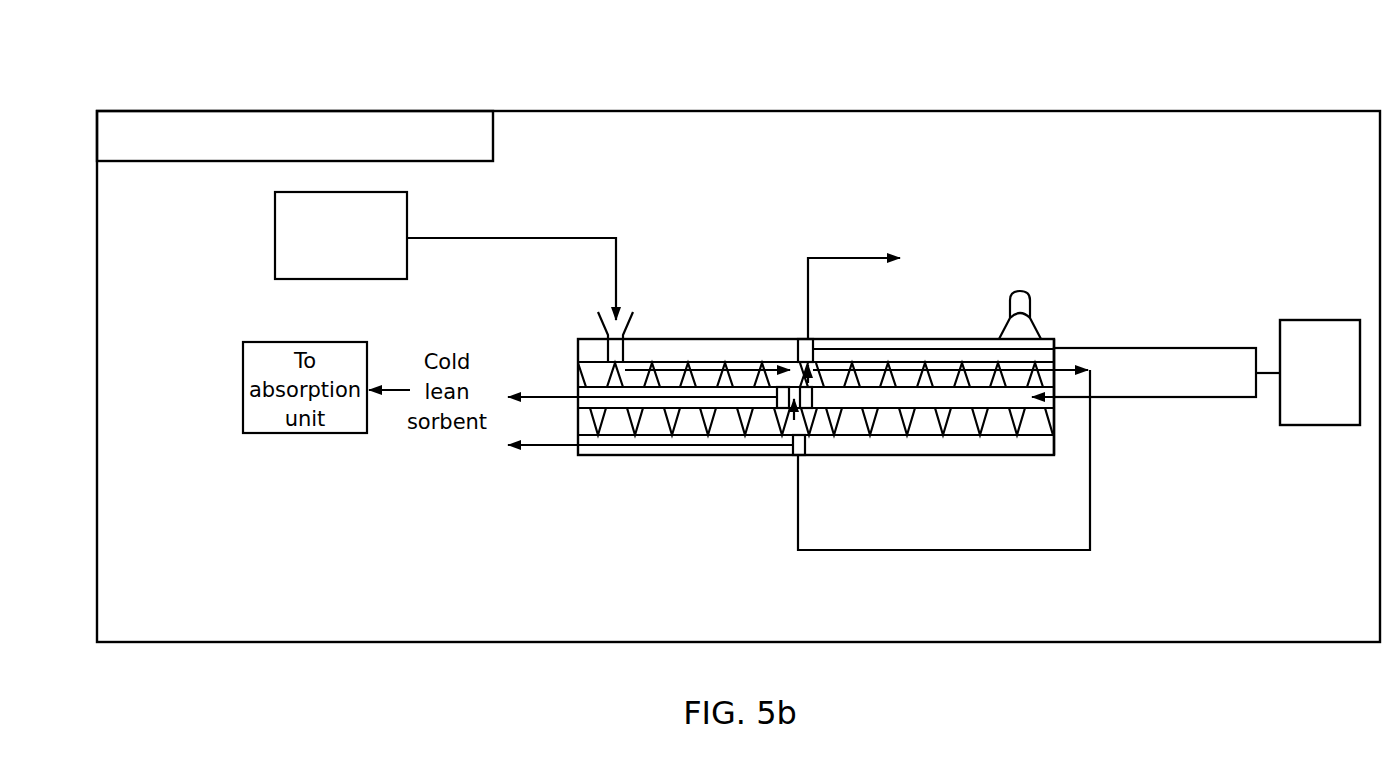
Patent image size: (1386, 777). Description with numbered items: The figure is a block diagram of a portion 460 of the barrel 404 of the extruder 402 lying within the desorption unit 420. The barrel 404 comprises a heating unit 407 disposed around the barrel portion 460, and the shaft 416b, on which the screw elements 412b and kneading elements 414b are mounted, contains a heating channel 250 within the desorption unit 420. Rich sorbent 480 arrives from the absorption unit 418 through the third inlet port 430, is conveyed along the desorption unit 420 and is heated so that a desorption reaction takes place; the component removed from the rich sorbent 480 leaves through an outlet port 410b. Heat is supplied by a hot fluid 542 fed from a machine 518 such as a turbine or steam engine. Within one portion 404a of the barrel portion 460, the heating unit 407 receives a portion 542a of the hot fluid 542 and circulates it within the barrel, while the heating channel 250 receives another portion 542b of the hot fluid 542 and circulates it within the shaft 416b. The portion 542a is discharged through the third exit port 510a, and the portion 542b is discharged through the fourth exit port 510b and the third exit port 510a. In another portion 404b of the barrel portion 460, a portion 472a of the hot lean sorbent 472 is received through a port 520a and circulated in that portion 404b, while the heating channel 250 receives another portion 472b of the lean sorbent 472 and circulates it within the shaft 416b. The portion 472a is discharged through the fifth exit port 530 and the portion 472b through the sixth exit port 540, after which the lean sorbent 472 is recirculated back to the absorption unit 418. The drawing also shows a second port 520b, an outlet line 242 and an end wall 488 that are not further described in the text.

The portion of the barrel 460 is at (212, 72).
The desorption unit 420 is at (662, 102).
The absorption unit 418 is at (340, 281).
The rich sorbent 480 is at (510, 237).
The extruder 402 is at (575, 326).
The third inlet port 430 is at (628, 333).
The barrel 404 is at (612, 438).
The heating channel 250 is at (660, 410).
The portion of the lean sorbent 472b is at (668, 398).
The heating unit 407 is at (690, 456).
The portion of the lean sorbent 472a is at (735, 440).
The sixth exit port 540 is at (576, 402).
The fifth exit port 530 is at (572, 454).
The third exit port 510a is at (814, 337).
The second gate 520b is at (775, 388).
The fourth exit port 510b is at (814, 408).
The port 520a is at (806, 456).
The portion of the barrel portion 404b is at (778, 470).
The CO2 outlet 242 is at (850, 256).
The portion of the barrel portion 404a is at (864, 327).
The shaft 416b is at (1008, 418).
The screw elements 412b is at (905, 410).
The kneading elements 414b is at (967, 410).
The end wall 488 is at (1047, 458).
The lean sorbent 472 is at (1092, 503).
The outlet port 410b is at (1021, 290).
The hot fluid 542 is at (1270, 360).
The portion of the hot fluid 542a is at (1193, 347).
The portion of the hot fluid 542b is at (1213, 399).
The machine 518 is at (1308, 372).